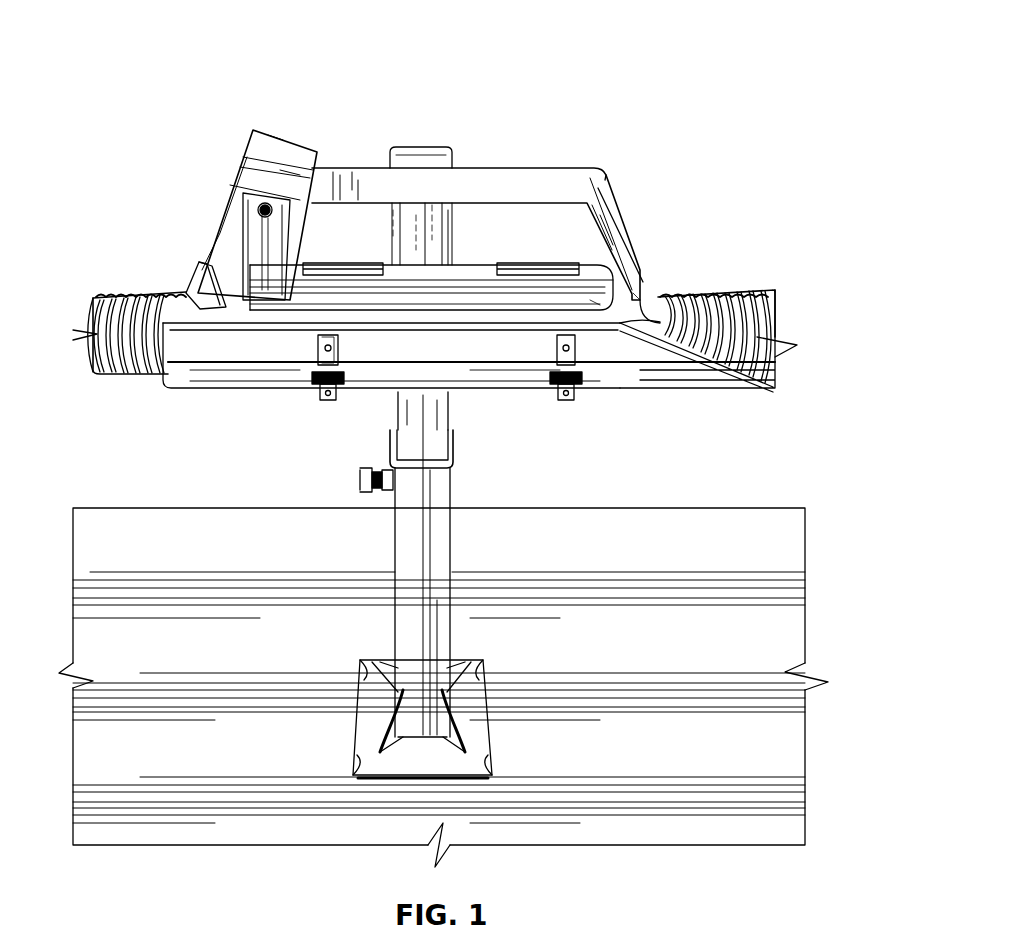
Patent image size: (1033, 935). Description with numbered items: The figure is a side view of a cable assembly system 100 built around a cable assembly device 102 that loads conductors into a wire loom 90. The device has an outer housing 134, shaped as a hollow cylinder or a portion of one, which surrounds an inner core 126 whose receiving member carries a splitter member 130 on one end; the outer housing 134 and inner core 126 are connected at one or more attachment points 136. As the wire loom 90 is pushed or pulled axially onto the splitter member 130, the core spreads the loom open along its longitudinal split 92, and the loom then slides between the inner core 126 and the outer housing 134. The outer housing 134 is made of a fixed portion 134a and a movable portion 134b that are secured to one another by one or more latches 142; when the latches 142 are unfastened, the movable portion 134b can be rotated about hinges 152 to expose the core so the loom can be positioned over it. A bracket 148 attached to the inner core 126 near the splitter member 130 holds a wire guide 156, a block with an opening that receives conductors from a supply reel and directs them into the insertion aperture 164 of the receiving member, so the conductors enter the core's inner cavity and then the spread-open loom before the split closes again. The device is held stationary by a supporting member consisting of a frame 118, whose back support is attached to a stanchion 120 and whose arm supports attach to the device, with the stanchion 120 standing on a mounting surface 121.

The cable assembly system 100 is at (110, 36).
The cable assembly device 102 is at (773, 270).
The wire loom 90 is at (107, 370).
The longitudinal split 92 is at (683, 290).
The frame 118 is at (538, 183).
The stanchion 120 is at (452, 543).
The mounting surface 121 is at (787, 538).
The inner core 126 is at (653, 277).
The splitter member 130 is at (188, 285).
The outer housing 134 is at (458, 384).
The fixed portion 134a is at (270, 347).
The movable portion 134b is at (187, 373).
The attachment points 136 is at (467, 267).
The latches 142 is at (337, 395).
The bracket 148 is at (253, 253).
The hinges 152 is at (540, 265).
The wire guide 156 is at (283, 138).
The insertion aperture 164 is at (573, 300).